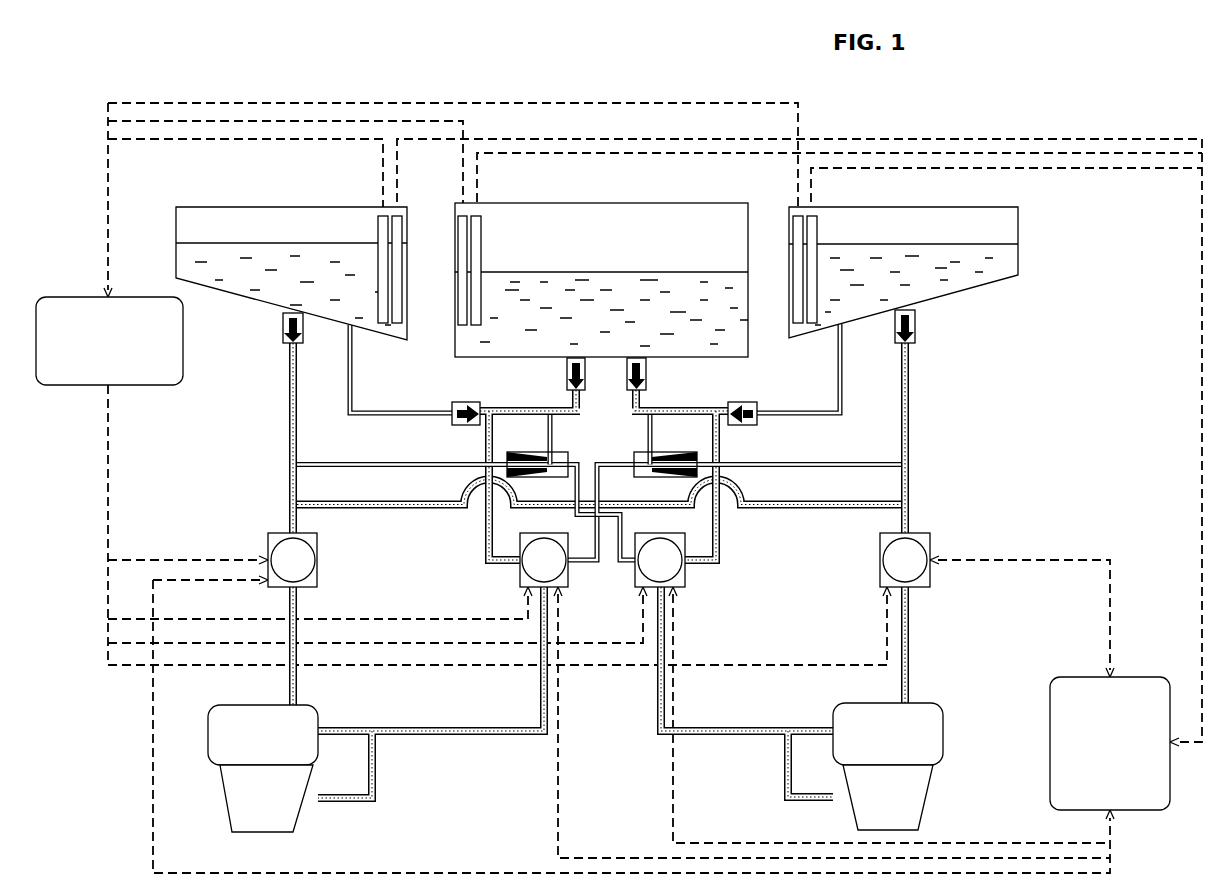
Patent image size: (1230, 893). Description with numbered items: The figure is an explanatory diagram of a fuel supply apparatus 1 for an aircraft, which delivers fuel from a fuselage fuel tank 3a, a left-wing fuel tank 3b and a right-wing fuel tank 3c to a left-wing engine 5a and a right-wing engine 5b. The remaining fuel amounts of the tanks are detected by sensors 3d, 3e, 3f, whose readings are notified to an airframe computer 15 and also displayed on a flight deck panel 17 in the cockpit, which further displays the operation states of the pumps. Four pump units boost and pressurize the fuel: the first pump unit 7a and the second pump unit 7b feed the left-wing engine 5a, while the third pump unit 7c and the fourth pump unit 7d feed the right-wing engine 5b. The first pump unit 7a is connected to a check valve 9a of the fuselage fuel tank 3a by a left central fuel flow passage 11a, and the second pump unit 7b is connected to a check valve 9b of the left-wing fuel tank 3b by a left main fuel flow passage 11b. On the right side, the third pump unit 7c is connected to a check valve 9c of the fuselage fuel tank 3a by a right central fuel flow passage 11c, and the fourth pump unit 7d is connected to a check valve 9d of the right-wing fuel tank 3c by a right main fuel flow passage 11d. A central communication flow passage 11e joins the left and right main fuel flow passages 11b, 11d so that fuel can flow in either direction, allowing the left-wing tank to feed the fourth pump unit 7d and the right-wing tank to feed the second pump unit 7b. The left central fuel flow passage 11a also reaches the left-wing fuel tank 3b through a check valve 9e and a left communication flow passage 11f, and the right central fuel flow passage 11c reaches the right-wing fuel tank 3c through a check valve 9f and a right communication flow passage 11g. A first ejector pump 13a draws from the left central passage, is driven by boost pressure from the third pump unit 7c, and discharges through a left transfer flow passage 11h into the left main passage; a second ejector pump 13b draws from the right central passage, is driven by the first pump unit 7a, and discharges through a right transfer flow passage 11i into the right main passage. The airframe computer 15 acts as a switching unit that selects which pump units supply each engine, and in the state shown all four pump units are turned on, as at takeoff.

The fuel supply apparatus 1 is at (449, 88).
The fuselage fuel tank 3a is at (710, 358).
The left-wing fuel tank 3b is at (213, 291).
The right-wing fuel tank 3c is at (1003, 283).
The sensor 3d is at (398, 248).
The sensor 3e is at (458, 288).
The sensor 3f is at (795, 287).
The left-wing engine 5a is at (240, 808).
The right-wing engine 5b is at (916, 786).
The first pump unit 7a is at (520, 578).
The second pump unit 7b is at (317, 560).
The third pump unit 7c is at (685, 572).
The fourth pump unit 7d is at (880, 562).
The check valve 9a is at (567, 378).
The check valve 9b is at (304, 330).
The check valve 9c is at (646, 378).
The check valve 9d is at (915, 326).
The check valve 9e is at (466, 426).
The check valve 9f is at (745, 426).
The left central fuel flow passage 11a is at (485, 541).
The left main fuel flow passage 11b is at (289, 426).
The right central fuel flow passage 11c is at (720, 532).
The right main fuel flow passage 11d is at (910, 411).
The central communication flow passage 11e is at (347, 508).
The left communication flow passage 11f is at (353, 372).
The right communication flow passage 11g is at (838, 378).
The left transfer flow passage 11h is at (333, 467).
The right transfer flow passage 11i is at (840, 466).
The first ejector pump 13a is at (568, 452).
The second ejector pump 13b is at (632, 452).
The airframe computer 15 is at (67, 386).
The flight deck panel 17 is at (1075, 677).